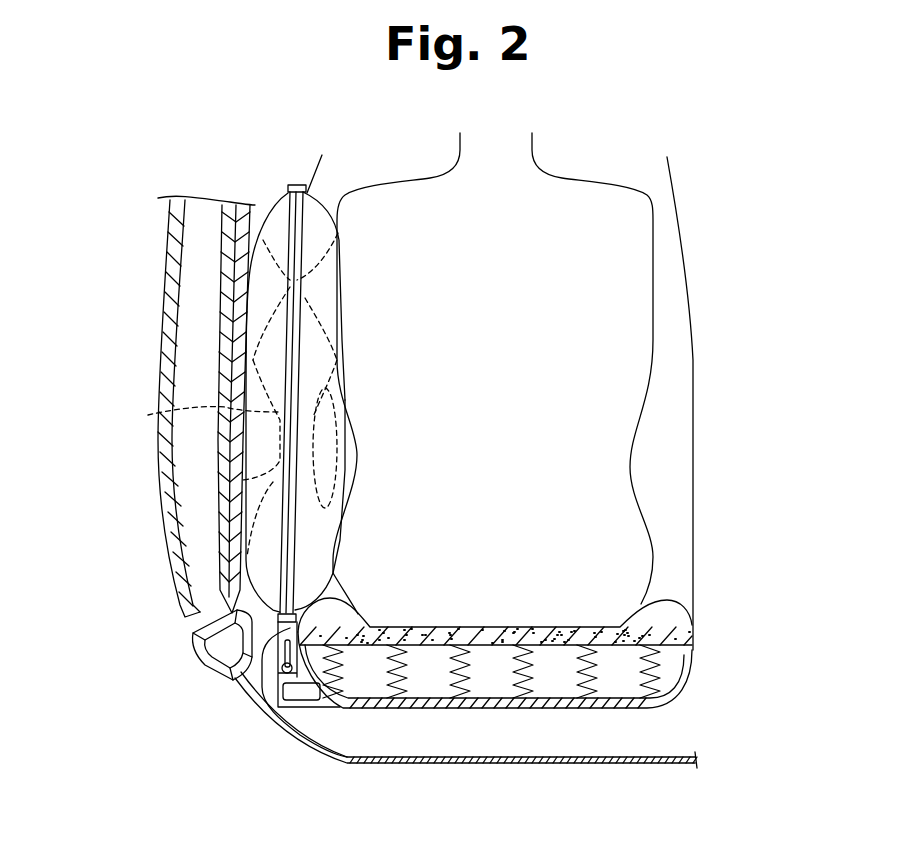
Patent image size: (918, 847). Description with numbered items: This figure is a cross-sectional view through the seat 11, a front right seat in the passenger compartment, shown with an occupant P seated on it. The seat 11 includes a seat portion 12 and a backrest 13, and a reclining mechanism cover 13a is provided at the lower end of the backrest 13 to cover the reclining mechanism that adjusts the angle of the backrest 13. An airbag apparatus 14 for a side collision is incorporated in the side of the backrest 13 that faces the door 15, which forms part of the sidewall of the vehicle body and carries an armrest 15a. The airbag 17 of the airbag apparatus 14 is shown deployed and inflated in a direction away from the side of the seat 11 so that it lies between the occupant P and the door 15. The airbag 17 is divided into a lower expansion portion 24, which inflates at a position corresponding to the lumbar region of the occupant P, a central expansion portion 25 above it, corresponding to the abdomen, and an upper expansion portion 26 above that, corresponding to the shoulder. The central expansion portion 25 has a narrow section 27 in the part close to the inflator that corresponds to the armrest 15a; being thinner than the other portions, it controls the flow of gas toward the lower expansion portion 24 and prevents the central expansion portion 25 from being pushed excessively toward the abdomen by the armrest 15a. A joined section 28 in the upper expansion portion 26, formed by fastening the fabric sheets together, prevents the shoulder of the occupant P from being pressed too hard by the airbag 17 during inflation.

The occupant P is at (657, 237).
The seat 11 is at (707, 427).
The seat portion 12 is at (693, 617).
The backrest 13 is at (695, 335).
The reclining mechanism cover 13a is at (257, 700).
The airbag apparatus 14 is at (372, 240).
The door 15 is at (167, 268).
The armrest 15a is at (190, 416).
The airbag 17 is at (282, 175).
The lower expansion portion 24 is at (317, 553).
The central expansion portion 25 is at (345, 410).
The upper expansion portion 26 is at (330, 273).
The narrow section 27 is at (313, 450).
The joined section 28 is at (310, 300).